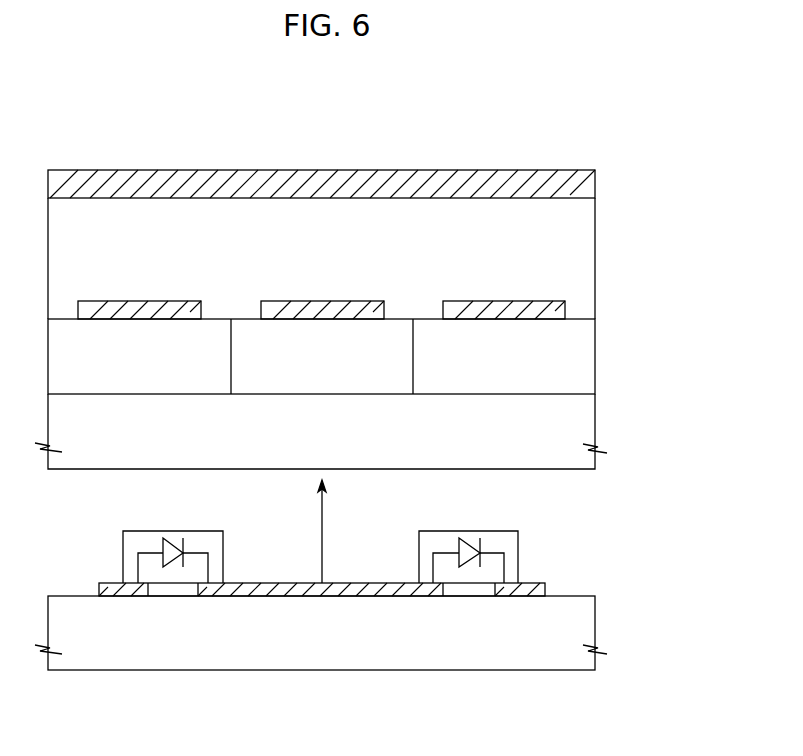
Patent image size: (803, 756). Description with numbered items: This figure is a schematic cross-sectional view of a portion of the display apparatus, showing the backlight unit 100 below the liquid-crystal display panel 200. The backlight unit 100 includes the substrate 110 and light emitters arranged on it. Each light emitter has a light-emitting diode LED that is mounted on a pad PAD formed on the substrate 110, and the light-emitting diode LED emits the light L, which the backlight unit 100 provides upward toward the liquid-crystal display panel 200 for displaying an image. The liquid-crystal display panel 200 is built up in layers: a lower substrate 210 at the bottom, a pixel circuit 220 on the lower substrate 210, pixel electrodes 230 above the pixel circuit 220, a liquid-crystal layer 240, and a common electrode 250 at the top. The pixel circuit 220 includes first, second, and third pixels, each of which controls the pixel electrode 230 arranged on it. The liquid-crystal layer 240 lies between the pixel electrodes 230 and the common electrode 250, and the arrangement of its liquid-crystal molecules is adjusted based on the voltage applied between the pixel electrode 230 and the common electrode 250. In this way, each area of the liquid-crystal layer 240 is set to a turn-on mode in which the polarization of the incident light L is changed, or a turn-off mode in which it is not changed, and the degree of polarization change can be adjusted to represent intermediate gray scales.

The backlight unit 100 is at (398, 567).
The substrate 110 is at (597, 622).
The liquid-crystal display panel 200 is at (392, 319).
The lower substrate 210 is at (353, 420).
The pixel circuit 220 is at (583, 359).
The pixel electrode 230 is at (560, 312).
The liquid-crystal layer 240 is at (582, 249).
The common electrode 250 is at (585, 186).
The light-emitting diode LED is at (518, 541).
The pad unit PAD is at (545, 586).
The light L is at (311, 531).